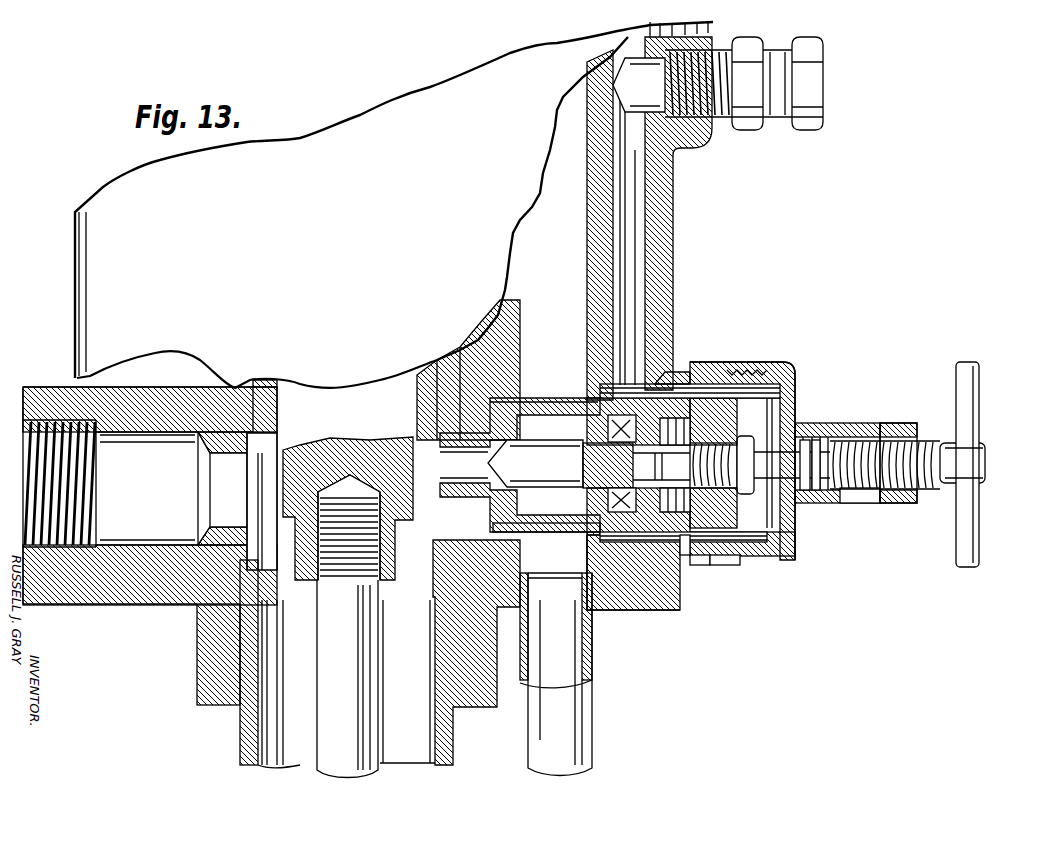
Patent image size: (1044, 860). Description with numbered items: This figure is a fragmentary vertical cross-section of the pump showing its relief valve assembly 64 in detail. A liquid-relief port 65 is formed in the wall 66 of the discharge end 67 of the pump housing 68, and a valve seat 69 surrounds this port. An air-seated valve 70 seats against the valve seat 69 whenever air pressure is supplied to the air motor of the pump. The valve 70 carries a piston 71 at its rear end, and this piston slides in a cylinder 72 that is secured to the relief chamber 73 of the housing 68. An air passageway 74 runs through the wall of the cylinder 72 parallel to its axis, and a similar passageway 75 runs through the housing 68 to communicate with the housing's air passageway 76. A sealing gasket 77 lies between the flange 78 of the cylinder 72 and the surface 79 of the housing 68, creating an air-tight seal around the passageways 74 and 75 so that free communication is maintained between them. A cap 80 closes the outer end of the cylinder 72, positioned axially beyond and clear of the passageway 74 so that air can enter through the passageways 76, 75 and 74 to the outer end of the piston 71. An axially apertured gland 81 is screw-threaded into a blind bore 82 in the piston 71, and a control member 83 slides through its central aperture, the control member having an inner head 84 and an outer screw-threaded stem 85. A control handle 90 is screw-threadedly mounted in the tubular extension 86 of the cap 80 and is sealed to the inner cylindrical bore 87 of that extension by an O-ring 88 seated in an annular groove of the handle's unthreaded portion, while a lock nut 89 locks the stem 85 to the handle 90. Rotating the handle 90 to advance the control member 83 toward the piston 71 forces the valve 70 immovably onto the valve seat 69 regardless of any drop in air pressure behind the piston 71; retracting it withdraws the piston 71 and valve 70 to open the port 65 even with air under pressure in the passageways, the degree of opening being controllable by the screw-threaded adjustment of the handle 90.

The pressure relief valve assembly 64 is at (890, 185).
The liquid-relief port 65 is at (467, 368).
The wall 66 is at (492, 585).
The discharge end 67 is at (275, 540).
The pump housing 68 is at (210, 665).
The valve seat 69 is at (518, 398).
The air-seated valve 70 is at (600, 608).
The piston 71 is at (700, 560).
The cylinder 72 is at (735, 560).
The relief chamber 73 is at (557, 425).
The air passageway 74 is at (712, 430).
The passageway 75 is at (660, 383).
The air passageway 76 is at (645, 263).
The sealing gasket 77 is at (688, 383).
The flange 78 is at (687, 555).
The surface 79 is at (690, 572).
The cap 80 is at (795, 395).
The axially apertured gland 81 is at (747, 560).
The blind bore 82 is at (643, 470).
The control member 83 is at (797, 440).
The inner head 84 is at (730, 382).
The screw-threaded stem 85 is at (853, 496).
The tubular extension 86 is at (864, 428).
The inner cylindrical bore 87 is at (840, 497).
The O-ring 88 is at (814, 490).
The lock nut 89 is at (800, 505).
The control handle 90 is at (965, 525).